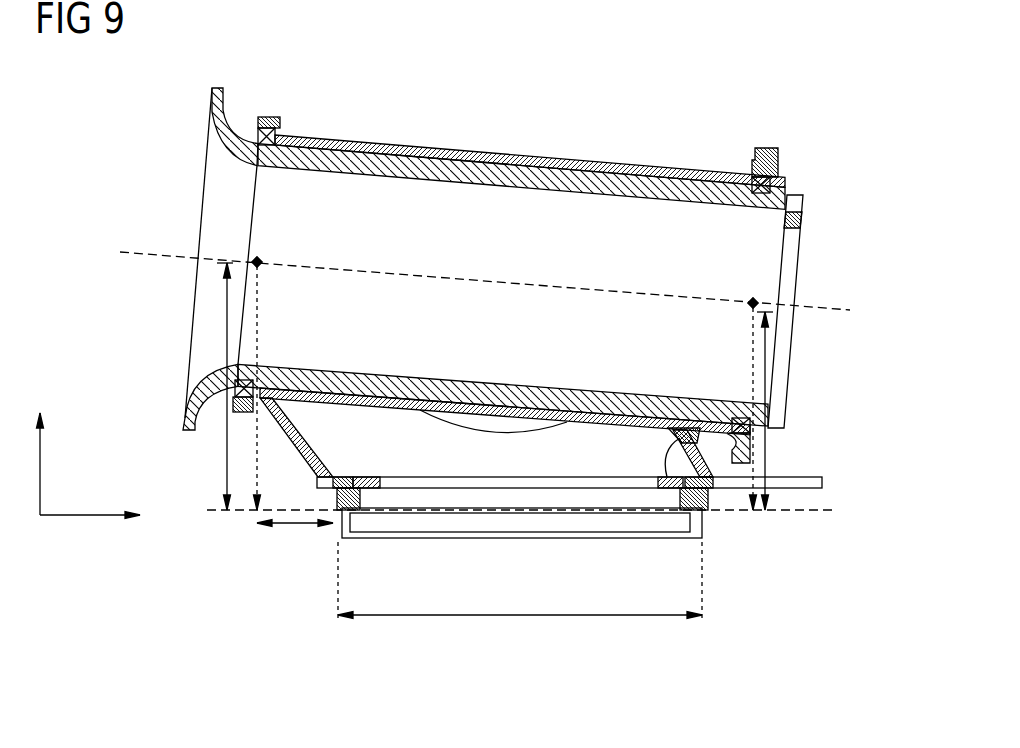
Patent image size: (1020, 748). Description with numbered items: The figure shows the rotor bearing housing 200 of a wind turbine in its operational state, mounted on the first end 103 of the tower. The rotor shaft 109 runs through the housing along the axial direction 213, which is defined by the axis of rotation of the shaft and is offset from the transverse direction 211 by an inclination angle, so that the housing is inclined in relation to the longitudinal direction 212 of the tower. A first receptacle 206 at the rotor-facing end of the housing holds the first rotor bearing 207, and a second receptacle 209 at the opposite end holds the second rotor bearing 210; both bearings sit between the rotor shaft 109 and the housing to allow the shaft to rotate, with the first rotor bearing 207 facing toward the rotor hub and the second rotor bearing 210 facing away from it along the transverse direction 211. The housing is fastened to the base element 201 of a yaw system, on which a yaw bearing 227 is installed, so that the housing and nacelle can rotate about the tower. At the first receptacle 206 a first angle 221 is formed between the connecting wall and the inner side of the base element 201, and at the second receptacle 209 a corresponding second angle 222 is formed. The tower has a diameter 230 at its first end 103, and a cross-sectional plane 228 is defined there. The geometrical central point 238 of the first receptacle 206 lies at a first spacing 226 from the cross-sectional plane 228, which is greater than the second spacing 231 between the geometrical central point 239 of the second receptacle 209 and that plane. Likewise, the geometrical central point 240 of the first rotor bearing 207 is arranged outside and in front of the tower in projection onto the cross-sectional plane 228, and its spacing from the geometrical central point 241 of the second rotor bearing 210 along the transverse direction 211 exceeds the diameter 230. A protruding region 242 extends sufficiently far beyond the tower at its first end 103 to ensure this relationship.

The first end 103 is at (413, 525).
The rotor shaft 109 is at (214, 139).
The rotor bearing housing 200 is at (557, 110).
The base element 201 is at (826, 491).
The first receptacle 206 is at (276, 100).
The first rotor bearing 207 is at (285, 126).
The second receptacle 209 is at (761, 147).
The second rotor bearing 210 is at (774, 158).
The transverse direction 211 is at (95, 515).
The longitudinal direction 212 is at (40, 475).
The axial direction 213 is at (834, 311).
The first angle 221 is at (322, 446).
The second angle 222 is at (694, 443).
The first spacing 226 is at (225, 335).
The yaw bearing 227 is at (710, 501).
The cross-sectional plane 228 is at (243, 512).
The diameter 230 is at (530, 618).
The second spacing 231 is at (776, 365).
The geometrical central point 238 is at (262, 266).
The geometrical central point 239 is at (749, 307).
The geometrical central point 240 is at (257, 262).
The geometrical central point 241 is at (753, 303).
The protruding region 242 is at (300, 525).